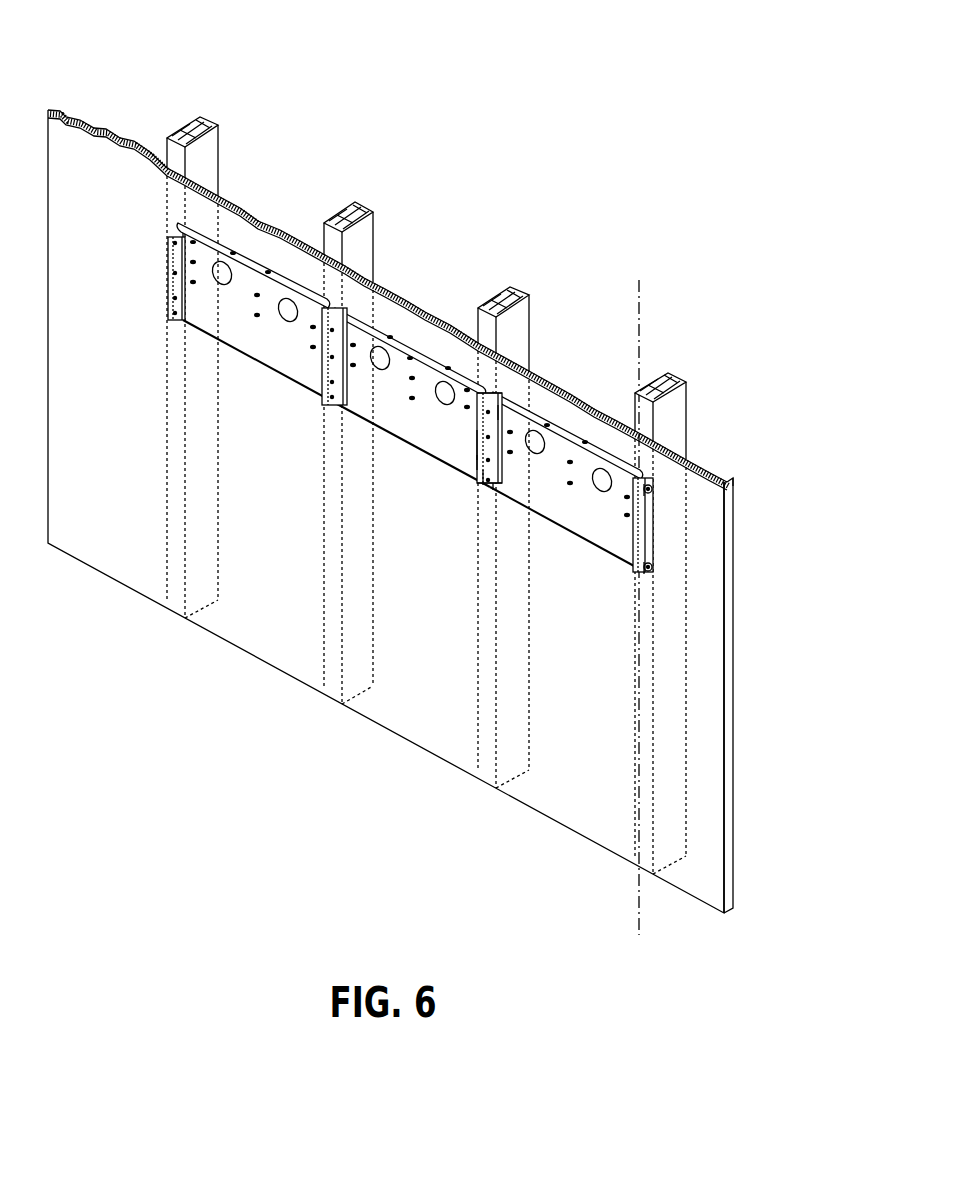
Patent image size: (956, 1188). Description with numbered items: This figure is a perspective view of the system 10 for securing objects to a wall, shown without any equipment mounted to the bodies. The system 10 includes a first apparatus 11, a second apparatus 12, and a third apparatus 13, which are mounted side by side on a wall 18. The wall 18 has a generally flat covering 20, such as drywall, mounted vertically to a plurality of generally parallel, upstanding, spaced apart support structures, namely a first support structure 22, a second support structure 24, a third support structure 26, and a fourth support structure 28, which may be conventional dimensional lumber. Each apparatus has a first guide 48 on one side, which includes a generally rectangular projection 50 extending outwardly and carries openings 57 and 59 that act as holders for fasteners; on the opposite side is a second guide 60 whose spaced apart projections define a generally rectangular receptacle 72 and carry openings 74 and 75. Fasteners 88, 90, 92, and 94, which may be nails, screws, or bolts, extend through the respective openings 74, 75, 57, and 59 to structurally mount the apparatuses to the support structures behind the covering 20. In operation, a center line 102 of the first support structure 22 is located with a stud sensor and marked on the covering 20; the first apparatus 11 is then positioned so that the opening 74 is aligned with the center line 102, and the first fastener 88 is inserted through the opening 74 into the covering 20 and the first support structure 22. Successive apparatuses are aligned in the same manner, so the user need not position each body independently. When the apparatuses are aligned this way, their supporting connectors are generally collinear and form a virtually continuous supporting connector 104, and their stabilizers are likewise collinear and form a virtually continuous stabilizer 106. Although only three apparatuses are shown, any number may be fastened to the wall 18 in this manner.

The system 10 is at (525, 158).
The first apparatus 11 is at (565, 425).
The second apparatus 12 is at (410, 347).
The third apparatus 13 is at (213, 289).
The wall 18 is at (724, 453).
The covering 20 is at (90, 181).
The first support structure 22 is at (679, 422).
The second support structure 24 is at (523, 333).
The third support structure 26 is at (370, 244).
The fourth support structure 28 is at (213, 157).
The first guide 48 is at (495, 458).
The generally rectangular projection 50 is at (478, 448).
The opening 57 is at (476, 407).
The opening 59 is at (487, 472).
The second guide 60 is at (479, 458).
The generally rectangular receptacle 72 is at (475, 437).
The opening 74 is at (652, 490).
The opening 75 is at (651, 568).
The first fastener 88 is at (650, 500).
The fastener 90 is at (650, 578).
The fastener 92 is at (500, 418).
The fastener 94 is at (491, 480).
The center line 102 is at (638, 940).
The virtually continuous supporting connector 104 is at (184, 322).
The virtually continuous stabilizer 106 is at (176, 226).